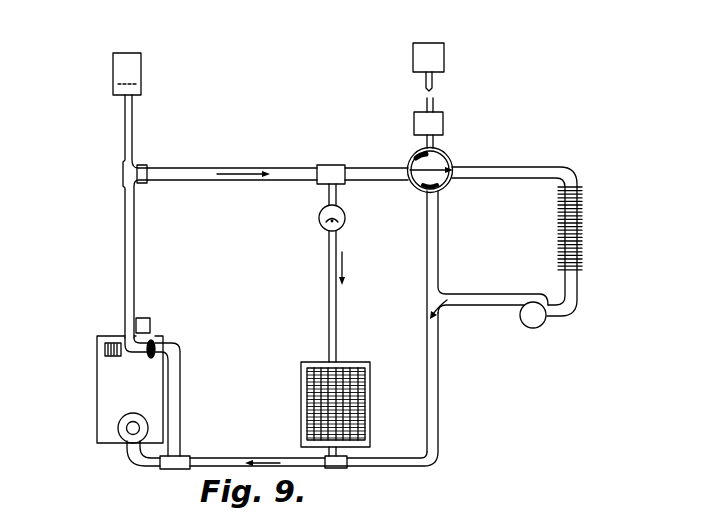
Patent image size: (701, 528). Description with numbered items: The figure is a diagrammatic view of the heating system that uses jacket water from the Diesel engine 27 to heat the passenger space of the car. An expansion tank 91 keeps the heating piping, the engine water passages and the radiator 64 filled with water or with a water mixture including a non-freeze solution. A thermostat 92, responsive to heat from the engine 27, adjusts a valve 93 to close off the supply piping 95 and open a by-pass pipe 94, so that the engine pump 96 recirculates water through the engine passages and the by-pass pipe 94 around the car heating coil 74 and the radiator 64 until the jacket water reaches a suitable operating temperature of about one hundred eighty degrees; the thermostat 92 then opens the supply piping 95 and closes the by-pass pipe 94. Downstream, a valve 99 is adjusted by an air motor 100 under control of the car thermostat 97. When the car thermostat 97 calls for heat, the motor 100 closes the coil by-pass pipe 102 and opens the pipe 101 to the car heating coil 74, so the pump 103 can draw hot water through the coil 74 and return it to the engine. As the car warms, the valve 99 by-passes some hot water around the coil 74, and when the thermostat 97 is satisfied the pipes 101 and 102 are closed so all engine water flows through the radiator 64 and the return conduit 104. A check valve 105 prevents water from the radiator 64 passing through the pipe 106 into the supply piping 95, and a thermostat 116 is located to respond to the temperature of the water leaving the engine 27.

The expansion tank 91 is at (125, 64).
The supply piping 95 is at (208, 168).
The car thermostat 97 is at (444, 58).
The air motor 100 is at (447, 122).
The valve 99 is at (451, 156).
The pipe 101 is at (517, 166).
The car heating coil 74 is at (579, 213).
The coil by-pass pipe 102 is at (434, 253).
The pump 103 is at (538, 327).
The check valve 105 is at (345, 219).
The pipe 106 is at (337, 317).
The radiator 64 is at (350, 362).
The return conduit 104 is at (305, 467).
The thermostat 116 is at (146, 318).
The valve 93 is at (153, 342).
The thermostat 92 is at (105, 347).
The engine 27 is at (114, 396).
The pump 96 is at (118, 423).
The by-pass pipe 94 is at (177, 400).